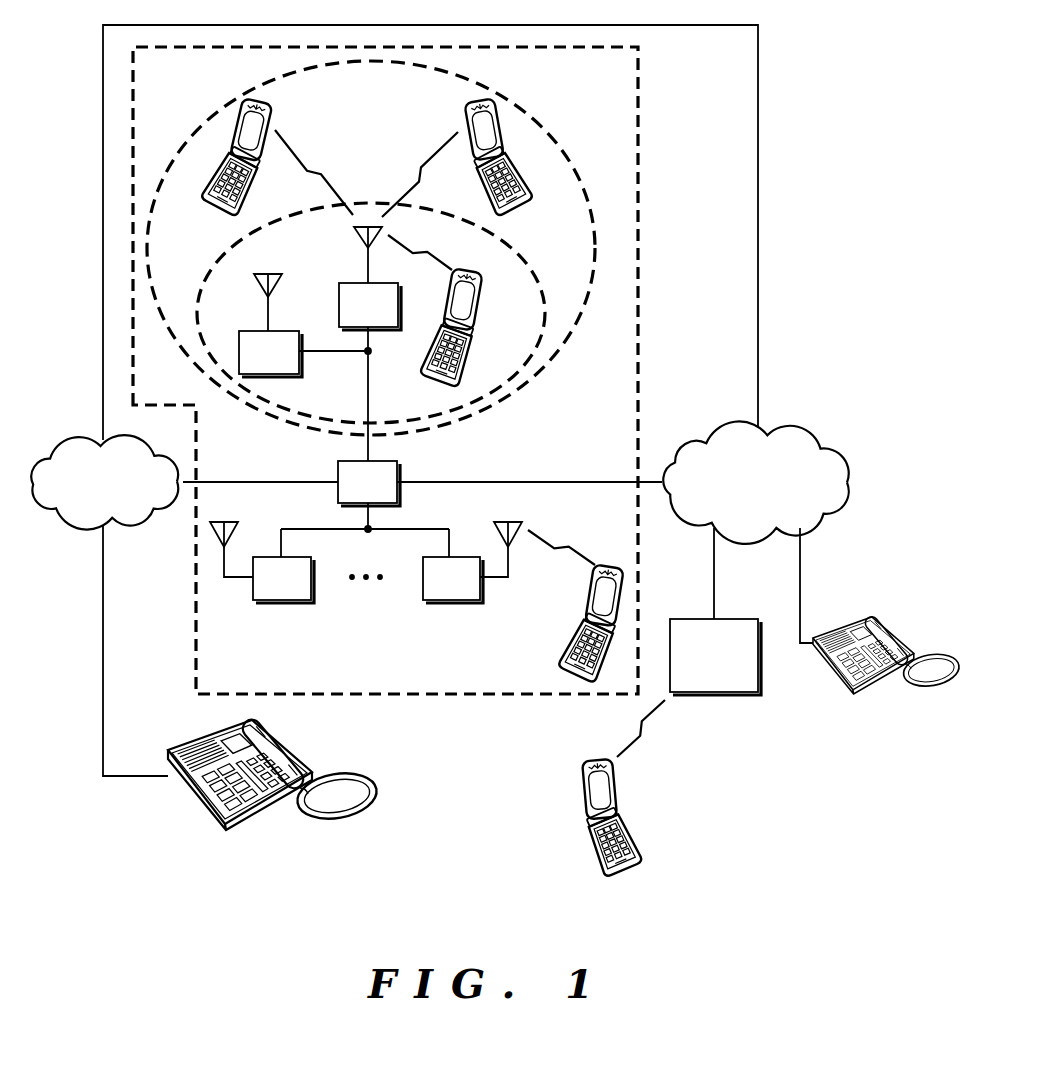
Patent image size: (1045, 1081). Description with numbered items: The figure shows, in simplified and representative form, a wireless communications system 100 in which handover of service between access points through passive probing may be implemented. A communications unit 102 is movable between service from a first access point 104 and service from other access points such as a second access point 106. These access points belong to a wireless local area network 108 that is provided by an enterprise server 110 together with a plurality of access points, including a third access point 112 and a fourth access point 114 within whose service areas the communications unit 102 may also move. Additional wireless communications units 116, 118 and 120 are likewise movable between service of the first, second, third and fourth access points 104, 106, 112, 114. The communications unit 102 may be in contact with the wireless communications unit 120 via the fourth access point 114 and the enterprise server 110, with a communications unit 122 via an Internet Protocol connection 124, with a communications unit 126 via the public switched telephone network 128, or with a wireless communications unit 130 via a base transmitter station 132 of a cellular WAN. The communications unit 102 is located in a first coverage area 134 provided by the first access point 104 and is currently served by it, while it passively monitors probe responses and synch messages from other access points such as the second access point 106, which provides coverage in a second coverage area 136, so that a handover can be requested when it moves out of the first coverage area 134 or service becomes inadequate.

The wireless communications system 100 is at (553, 941).
The communications unit 102 is at (472, 322).
The first wireless communications access point 104 is at (344, 282).
The second wireless access point 106 is at (242, 331).
The wireless local area network 108 is at (639, 283).
The enterprise server 110 is at (398, 500).
The third access point 112 is at (282, 600).
The fourth access point 114 is at (452, 600).
The wireless communications unit 116 is at (519, 210).
The wireless communications unit 118 is at (272, 104).
The wireless communications unit 120 is at (574, 671).
The communications unit 122 is at (226, 831).
The Internet Protocol connection 124 is at (126, 522).
The communications unit 126 is at (846, 688).
The public switched telephone network 128 is at (810, 431).
The wireless communications unit 130 is at (634, 862).
The base transmitter station 132 is at (714, 694).
The first coverage area 134 is at (537, 370).
The second coverage area 136 is at (369, 203).